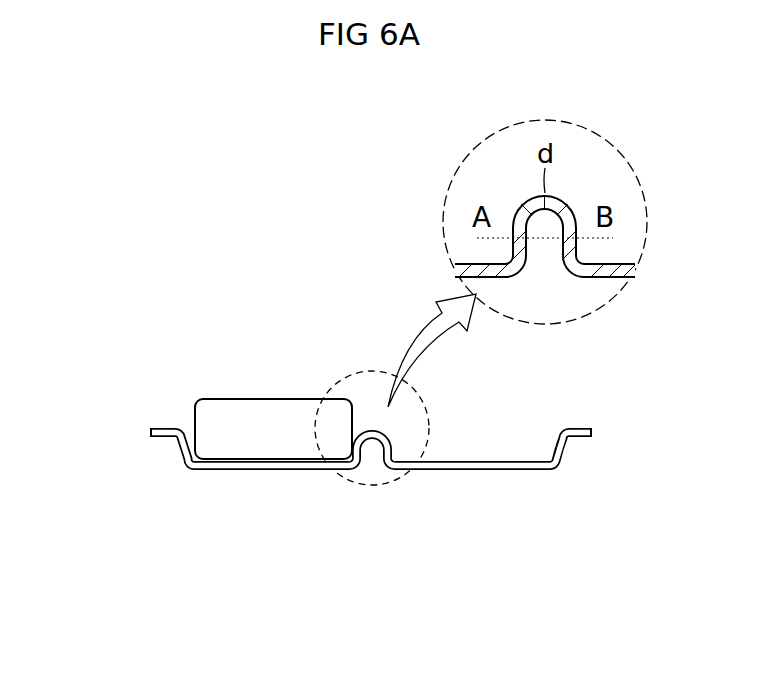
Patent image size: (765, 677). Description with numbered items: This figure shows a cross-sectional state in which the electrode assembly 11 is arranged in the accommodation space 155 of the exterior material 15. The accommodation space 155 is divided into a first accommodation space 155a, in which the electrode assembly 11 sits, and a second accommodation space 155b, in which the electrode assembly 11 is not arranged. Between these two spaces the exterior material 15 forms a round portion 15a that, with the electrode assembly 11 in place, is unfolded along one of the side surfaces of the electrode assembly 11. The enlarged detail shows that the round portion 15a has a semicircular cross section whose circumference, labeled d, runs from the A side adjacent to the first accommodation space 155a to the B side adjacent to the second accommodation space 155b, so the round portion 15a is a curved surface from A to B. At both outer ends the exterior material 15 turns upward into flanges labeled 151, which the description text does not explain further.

The electrode assembly 11 is at (270, 412).
The exterior material 15 is at (371, 471).
The flange 151 is at (161, 459).
The accommodation space 155 is at (372, 528).
The first accommodation space 155a is at (272, 470).
The second accommodation space 155b is at (477, 497).
The round portion 15a is at (372, 465).